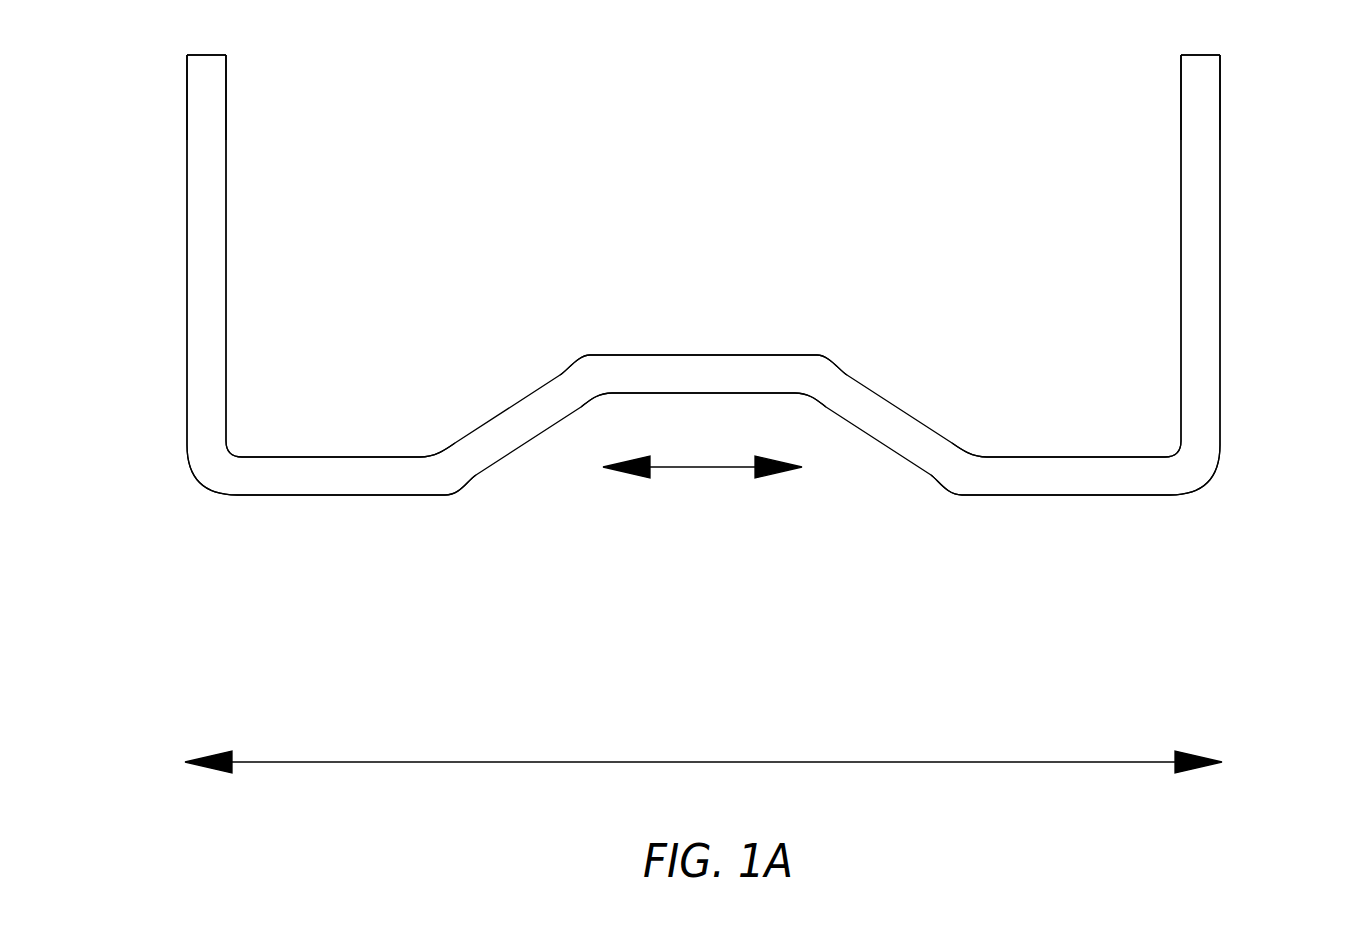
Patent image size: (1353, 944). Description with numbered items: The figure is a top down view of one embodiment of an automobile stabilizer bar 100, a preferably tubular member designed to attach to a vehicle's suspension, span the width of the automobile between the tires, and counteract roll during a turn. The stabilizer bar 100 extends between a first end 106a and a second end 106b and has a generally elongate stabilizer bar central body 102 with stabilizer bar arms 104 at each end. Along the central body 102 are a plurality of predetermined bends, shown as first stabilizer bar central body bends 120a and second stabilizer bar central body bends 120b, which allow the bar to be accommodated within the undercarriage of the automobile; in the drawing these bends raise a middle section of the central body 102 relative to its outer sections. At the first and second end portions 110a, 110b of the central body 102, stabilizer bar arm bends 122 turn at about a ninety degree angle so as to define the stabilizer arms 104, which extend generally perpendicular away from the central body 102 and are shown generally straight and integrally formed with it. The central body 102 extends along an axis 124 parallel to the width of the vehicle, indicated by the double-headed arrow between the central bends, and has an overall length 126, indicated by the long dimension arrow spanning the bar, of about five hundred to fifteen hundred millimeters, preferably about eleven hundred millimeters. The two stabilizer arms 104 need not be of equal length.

The stabilizer bar 100 is at (363, 514).
The stabilizer bar central body 102 is at (716, 332).
The stabilizer bar arms 104 is at (248, 160).
The first end 106a is at (175, 83).
The second end 106b is at (1233, 83).
The first end portion 110a is at (207, 505).
The second end portion 110b is at (1147, 510).
The first stabilizer bar central body bends 120a is at (523, 363).
The second stabilizer bar central body bends 120b is at (424, 443).
The stabilizer bar arm bends 122 is at (172, 460).
The axis 124 is at (795, 490).
The length 126 is at (657, 762).